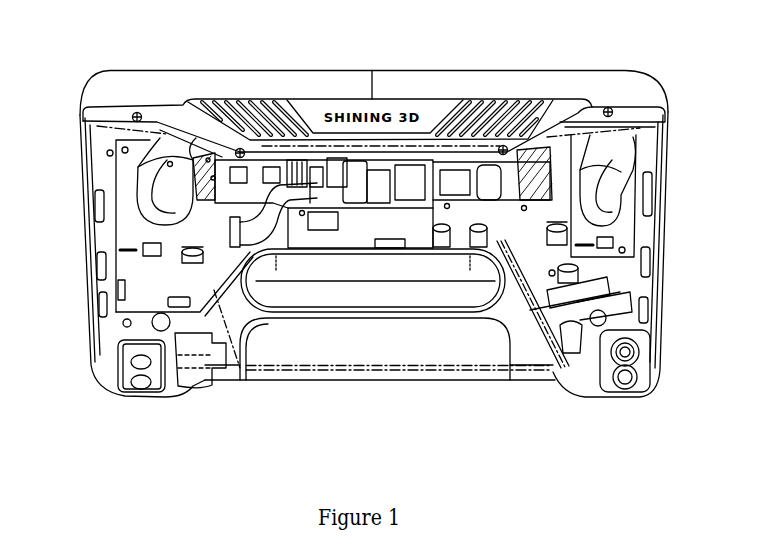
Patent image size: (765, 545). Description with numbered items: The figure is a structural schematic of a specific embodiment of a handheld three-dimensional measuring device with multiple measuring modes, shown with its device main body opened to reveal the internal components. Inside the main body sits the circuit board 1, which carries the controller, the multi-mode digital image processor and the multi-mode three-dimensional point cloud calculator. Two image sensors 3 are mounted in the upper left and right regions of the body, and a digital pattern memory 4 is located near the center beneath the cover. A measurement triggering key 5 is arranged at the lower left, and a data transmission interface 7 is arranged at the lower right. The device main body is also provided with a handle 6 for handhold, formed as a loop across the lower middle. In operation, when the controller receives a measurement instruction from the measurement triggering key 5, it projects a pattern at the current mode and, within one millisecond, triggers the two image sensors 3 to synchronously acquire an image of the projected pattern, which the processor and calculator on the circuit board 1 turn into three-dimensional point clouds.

The circuit board 1 is at (244, 382).
The image sensor 3 is at (130, 150).
The digital pattern memory 4 is at (371, 184).
The measurement triggering key 5 is at (197, 384).
The handle 6 is at (394, 341).
The data transmission interface 7 is at (620, 393).